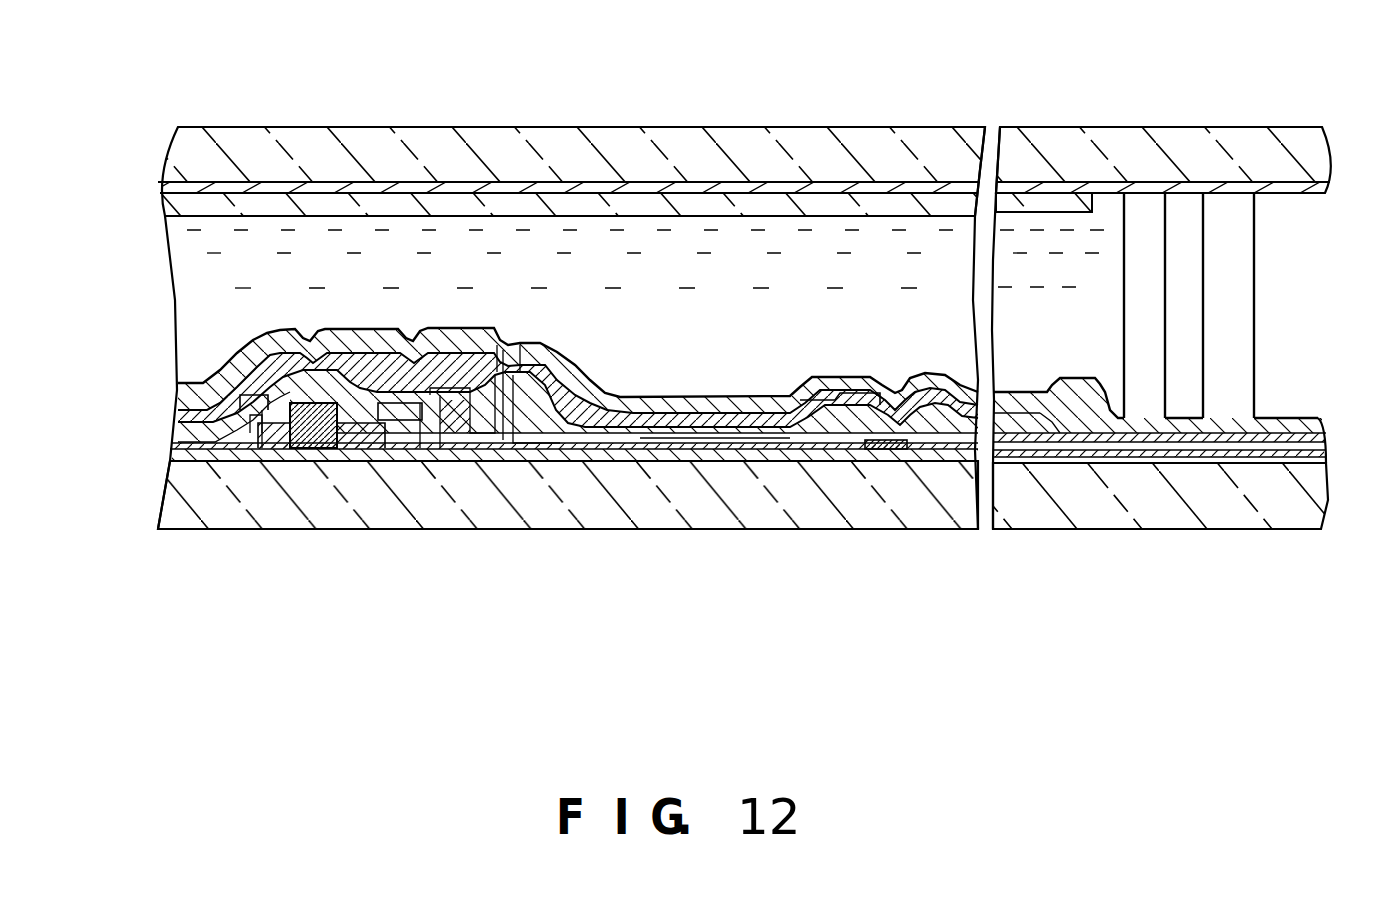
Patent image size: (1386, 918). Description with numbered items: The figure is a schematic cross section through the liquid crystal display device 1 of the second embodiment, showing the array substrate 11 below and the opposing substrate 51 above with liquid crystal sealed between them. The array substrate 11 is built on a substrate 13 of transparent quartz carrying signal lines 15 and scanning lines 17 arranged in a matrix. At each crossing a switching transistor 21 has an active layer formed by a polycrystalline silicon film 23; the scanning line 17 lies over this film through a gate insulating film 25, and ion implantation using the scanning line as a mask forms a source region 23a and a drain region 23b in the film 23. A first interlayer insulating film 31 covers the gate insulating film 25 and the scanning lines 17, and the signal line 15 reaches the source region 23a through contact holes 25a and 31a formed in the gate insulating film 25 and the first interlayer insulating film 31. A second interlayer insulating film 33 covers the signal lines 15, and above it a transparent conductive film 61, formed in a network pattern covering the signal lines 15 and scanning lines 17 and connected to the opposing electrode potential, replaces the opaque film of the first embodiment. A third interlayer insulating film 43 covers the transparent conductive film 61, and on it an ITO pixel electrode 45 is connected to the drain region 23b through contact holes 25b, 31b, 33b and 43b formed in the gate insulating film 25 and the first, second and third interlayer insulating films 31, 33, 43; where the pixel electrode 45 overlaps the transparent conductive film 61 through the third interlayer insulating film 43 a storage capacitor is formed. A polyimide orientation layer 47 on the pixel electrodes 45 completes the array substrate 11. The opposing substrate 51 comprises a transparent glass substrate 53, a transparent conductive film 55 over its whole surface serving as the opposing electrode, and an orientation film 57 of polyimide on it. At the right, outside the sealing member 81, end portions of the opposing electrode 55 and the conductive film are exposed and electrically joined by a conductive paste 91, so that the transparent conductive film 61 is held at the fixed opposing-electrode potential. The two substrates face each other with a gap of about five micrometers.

The liquid crystal display device 1 is at (826, 115).
The array substrate 11 is at (707, 445).
The substrate 13 is at (860, 520).
The signal line 15 is at (313, 452).
The scanning line 17 is at (385, 458).
The switching transistor 21 is at (565, 524).
The polycrystalline silicon film 23 is at (412, 445).
The source region 23a is at (338, 455).
The drain region 23b is at (455, 448).
The gate insulating film 25 is at (275, 450).
The contact hole 25a is at (282, 452).
The contact hole 25b is at (500, 455).
The first interlayer insulating film 31 is at (243, 458).
The contact hole 31a is at (213, 457).
The contact hole 31b is at (537, 455).
The second interlayer insulating film 33 is at (170, 452).
The contact hole 33b is at (530, 343).
The third interlayer insulating film 43 is at (173, 427).
The contact hole 43b is at (503, 345).
The pixel electrode 45 is at (680, 448).
The orientation layer 47 is at (928, 385).
The opposing substrate 51 is at (766, 121).
The glass substrate 53 is at (915, 152).
The transparent conductive film 55 is at (1305, 186).
The orientation film 57 is at (1088, 203).
The transparent conductive film 61 is at (250, 383).
The sealing member 81 is at (1143, 283).
The conductive paste 91 is at (1232, 306).